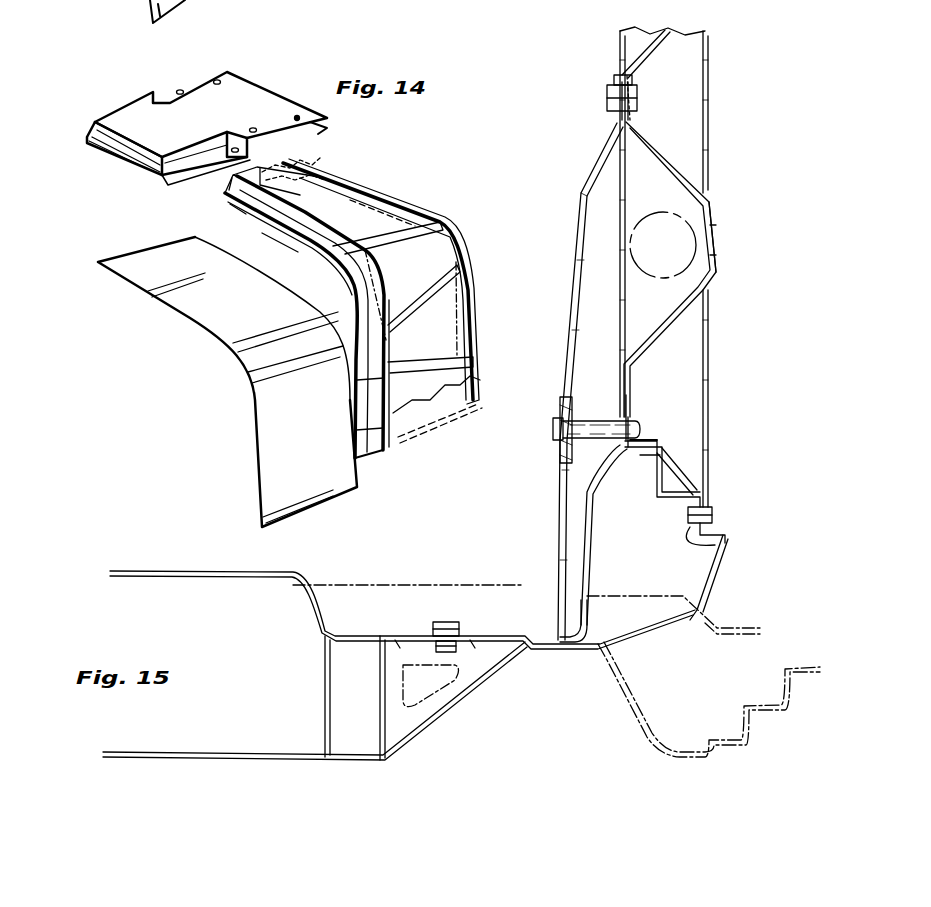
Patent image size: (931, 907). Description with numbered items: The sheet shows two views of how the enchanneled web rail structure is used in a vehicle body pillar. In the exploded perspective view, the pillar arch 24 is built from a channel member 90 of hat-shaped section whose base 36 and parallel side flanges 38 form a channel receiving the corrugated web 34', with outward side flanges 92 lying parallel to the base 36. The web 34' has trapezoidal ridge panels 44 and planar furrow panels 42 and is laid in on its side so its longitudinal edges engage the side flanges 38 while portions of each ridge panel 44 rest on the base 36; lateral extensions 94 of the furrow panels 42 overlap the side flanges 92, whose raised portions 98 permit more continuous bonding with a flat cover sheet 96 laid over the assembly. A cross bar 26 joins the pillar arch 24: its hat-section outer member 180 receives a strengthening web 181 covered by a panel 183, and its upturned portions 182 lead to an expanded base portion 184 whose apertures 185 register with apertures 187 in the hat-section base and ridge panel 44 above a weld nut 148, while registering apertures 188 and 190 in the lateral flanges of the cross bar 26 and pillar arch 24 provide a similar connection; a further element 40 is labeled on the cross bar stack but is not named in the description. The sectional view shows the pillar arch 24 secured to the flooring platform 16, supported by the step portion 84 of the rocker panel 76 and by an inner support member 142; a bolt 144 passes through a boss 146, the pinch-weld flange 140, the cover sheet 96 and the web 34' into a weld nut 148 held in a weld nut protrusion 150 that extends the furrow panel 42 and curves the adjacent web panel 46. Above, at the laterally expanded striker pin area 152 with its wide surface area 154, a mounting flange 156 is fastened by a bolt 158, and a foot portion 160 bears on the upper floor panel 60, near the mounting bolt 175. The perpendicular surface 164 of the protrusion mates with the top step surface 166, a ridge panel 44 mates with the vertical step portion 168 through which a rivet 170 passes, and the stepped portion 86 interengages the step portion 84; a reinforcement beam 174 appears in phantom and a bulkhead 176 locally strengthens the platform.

In FIG. 15, the flooring platform 16 is at (427, 630).
In FIG. 14, the pillar arch 24 is at (398, 184).
In FIG. 15, the pillar arch 24 is at (710, 163).
In FIG. 14, the cross bar 26 is at (170, 186).
In FIG. 14, the corrugated web 34' is at (381, 275).
In FIG. 15, the corrugated web 34' is at (694, 269).
In FIG. 14, the base 36 is at (470, 382).
In FIG. 14, the side flanges 38 is at (360, 409).
In FIG. 14, the pad 40 is at (143, 167).
In FIG. 14, the furrow panel 42 is at (432, 325).
In FIG. 15, the furrow panel 42 is at (620, 77).
In FIG. 14, the ridge panel 44 is at (420, 250).
In FIG. 15, the ridge panel 44 is at (716, 228).
In FIG. 15, the web panel 46 is at (652, 447).
In FIG. 15, the upper floor panel 60 is at (343, 633).
In FIG. 15, the rocker panel 76 is at (718, 549).
In FIG. 15, the step portion 84 is at (705, 600).
In FIG. 15, the stepped portion 86 is at (690, 466).
In FIG. 14, the channel member 90 is at (356, 430).
In FIG. 14, the side flanges 92 is at (240, 215).
In FIG. 14, the lateral extensions 94 is at (290, 246).
In FIG. 14, the cover sheet 96 is at (262, 430).
In FIG. 14, the raised portions 98 is at (360, 449).
In FIG. 15, the pinch-weld flange 140 is at (610, 415).
In FIG. 15, the inner support member 142 is at (578, 220).
In FIG. 15, the bolt 144 is at (553, 430).
In FIG. 15, the boss 146 is at (587, 440).
In FIG. 14, the weld nut 148 is at (322, 152).
In FIG. 15, the weld nut 148 is at (672, 84).
In FIG. 15, the weld nut protrusion 150 is at (660, 455).
In FIG. 15, the striker pin area 152 is at (718, 240).
In FIG. 15, the wide surface area 154 is at (685, 266).
In FIG. 15, the mounting flange 156 is at (614, 88).
In FIG. 15, the bolt 158 is at (612, 105).
In FIG. 15, the foot portion 160 is at (540, 632).
In FIG. 15, the perpendicular surface 164 is at (676, 458).
In FIG. 15, the top step surface 166 is at (643, 457).
In FIG. 15, the vertical step portion 168 is at (728, 539).
In FIG. 15, the rivet 170 is at (714, 515).
In FIG. 15, the reinforcement beam 174 is at (363, 585).
In FIG. 15, the mounting bolt 175 is at (440, 623).
In FIG. 15, the bulkhead 176 is at (428, 700).
In FIG. 14, the hat-section outer member 180 is at (163, 178).
In FIG. 14, the strengthening web 181 is at (133, 150).
In FIG. 14, the upturned portions 182 is at (254, 128).
In FIG. 14, the panel 183 is at (137, 158).
In FIG. 14, the expanded base portion 184 is at (227, 72).
In FIG. 14, the apertures 185 is at (300, 118).
In FIG. 14, the apertures 187 is at (328, 130).
In FIG. 14, the registering apertures 188 is at (233, 148).
In FIG. 14, the registering apertures 190 is at (223, 198).